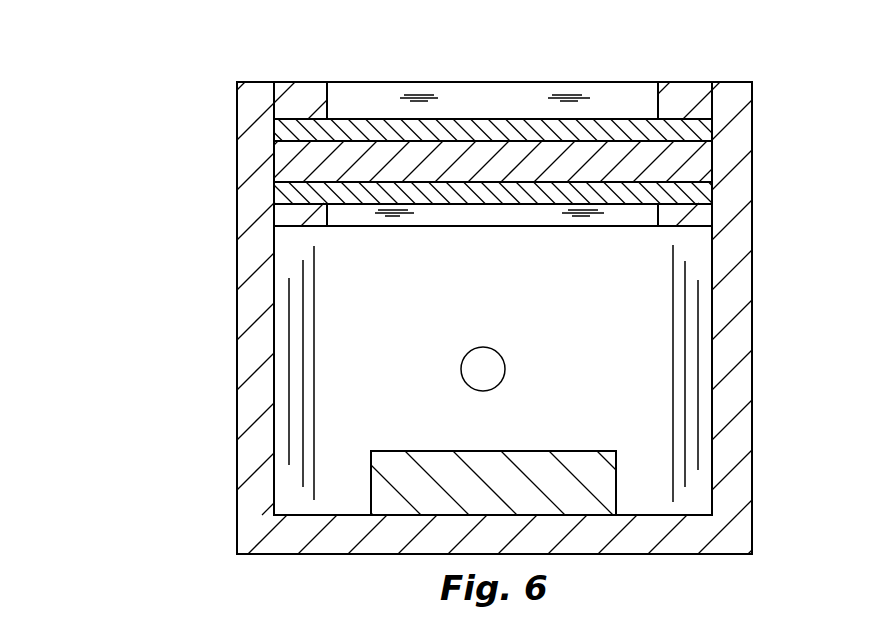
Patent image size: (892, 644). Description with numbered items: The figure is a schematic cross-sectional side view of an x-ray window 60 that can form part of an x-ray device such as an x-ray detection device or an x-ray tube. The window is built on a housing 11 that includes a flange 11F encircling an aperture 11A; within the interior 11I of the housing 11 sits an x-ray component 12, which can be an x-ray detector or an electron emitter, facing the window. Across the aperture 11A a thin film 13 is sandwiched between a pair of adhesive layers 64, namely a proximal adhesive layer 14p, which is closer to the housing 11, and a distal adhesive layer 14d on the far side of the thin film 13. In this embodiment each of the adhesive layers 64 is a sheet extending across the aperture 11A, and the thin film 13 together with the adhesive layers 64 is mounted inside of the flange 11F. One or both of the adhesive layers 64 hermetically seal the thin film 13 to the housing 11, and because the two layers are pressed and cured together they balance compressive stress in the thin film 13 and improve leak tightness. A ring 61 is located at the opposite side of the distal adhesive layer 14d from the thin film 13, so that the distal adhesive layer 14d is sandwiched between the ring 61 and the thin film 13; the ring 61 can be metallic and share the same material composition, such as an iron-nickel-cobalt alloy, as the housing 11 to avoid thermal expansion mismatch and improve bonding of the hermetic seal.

The x-ray window 60 is at (108, 225).
The aperture 11A is at (498, 56).
The flange 11F is at (493, 154).
The pair of adhesive layers 64 is at (290, 192).
The proximal adhesive layer 14p is at (695, 132).
The distal adhesive layer 14d is at (700, 196).
The thin film 13 is at (501, 172).
The ring 61 is at (671, 214).
The interior 11I is at (483, 369).
The x-ray component 12 is at (497, 497).
The housing 11 is at (498, 546).